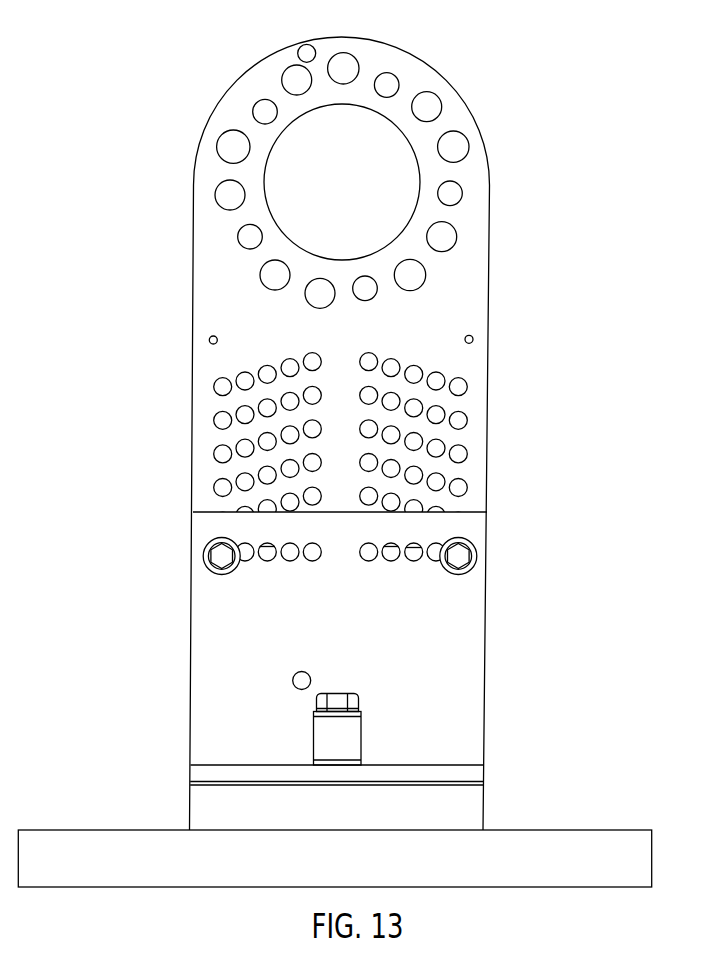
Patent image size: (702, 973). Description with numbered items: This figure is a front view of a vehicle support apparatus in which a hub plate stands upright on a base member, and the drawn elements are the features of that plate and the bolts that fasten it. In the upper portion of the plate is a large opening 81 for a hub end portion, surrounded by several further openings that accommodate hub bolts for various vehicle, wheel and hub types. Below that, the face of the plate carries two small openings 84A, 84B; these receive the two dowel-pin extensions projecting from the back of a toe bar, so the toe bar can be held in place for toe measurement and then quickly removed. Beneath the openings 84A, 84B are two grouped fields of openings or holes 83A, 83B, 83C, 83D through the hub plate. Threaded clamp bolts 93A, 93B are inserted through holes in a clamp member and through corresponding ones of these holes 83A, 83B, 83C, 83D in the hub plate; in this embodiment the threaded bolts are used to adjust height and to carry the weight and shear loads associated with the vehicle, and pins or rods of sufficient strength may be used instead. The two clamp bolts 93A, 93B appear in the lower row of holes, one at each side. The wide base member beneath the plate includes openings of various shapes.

The opening for a hub end portion 81 is at (342, 182).
The opening in the hub plate 84A is at (206, 335).
The opening in the hub plate 84B is at (475, 334).
The opening in the hub plate 83A is at (212, 382).
The opening in the hub plate 83B is at (242, 473).
The opening in the hub plate 83C is at (444, 409).
The opening in the hub plate 83D is at (470, 448).
The threaded clamp bolt 93A is at (202, 546).
The threaded clamp bolt 93B is at (471, 543).